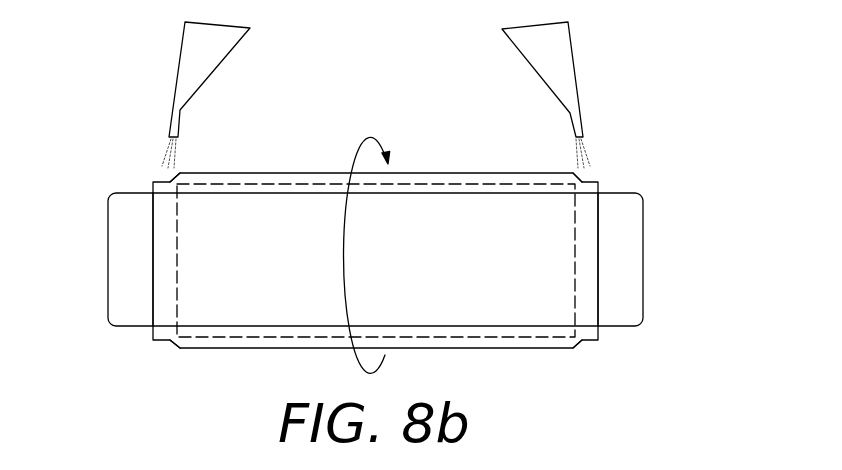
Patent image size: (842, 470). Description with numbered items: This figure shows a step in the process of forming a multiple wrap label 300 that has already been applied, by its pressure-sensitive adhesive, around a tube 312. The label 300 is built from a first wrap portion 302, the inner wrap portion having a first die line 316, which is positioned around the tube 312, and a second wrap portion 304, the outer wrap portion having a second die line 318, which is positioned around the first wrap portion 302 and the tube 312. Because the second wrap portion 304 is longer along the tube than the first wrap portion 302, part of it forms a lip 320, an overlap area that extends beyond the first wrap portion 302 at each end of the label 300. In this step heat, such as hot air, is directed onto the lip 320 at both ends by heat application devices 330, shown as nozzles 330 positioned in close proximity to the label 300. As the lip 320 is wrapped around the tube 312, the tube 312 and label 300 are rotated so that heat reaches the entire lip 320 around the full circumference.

The multiple wrap label 300 is at (444, 172).
The first wrap portion 302 is at (317, 184).
The second wrap portion 304 is at (217, 173).
The tube 312 is at (650, 289).
The first die line 316 is at (178, 279).
The second die line 318 is at (153, 240).
The lip 320 is at (169, 173).
The heat application device 330 is at (175, 67).